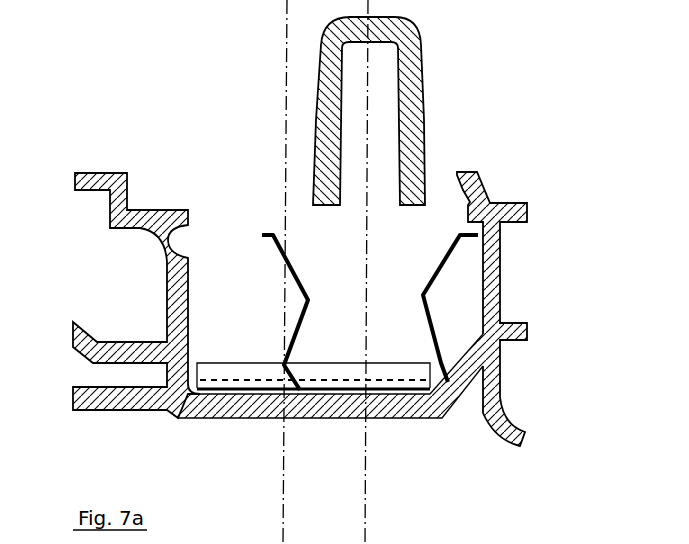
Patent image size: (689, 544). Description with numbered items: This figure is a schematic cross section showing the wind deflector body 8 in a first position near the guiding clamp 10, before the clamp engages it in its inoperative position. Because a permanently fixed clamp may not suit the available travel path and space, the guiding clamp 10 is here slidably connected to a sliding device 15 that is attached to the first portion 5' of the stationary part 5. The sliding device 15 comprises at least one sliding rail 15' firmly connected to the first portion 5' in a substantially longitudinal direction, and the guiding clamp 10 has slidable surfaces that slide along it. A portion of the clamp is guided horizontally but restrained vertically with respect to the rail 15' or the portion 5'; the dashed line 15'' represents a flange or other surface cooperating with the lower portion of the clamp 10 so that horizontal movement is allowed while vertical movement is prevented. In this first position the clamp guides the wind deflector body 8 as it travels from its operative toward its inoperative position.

The wind deflector body 8 is at (423, 85).
The sliding device 15 is at (110, 330).
The stationary part 5 is at (289, 461).
The first portion of the stationary part 5' is at (441, 419).
The guiding clamp 10 is at (483, 288).
The sliding rail 15' is at (301, 437).
The flange or surface 15'' is at (159, 317).